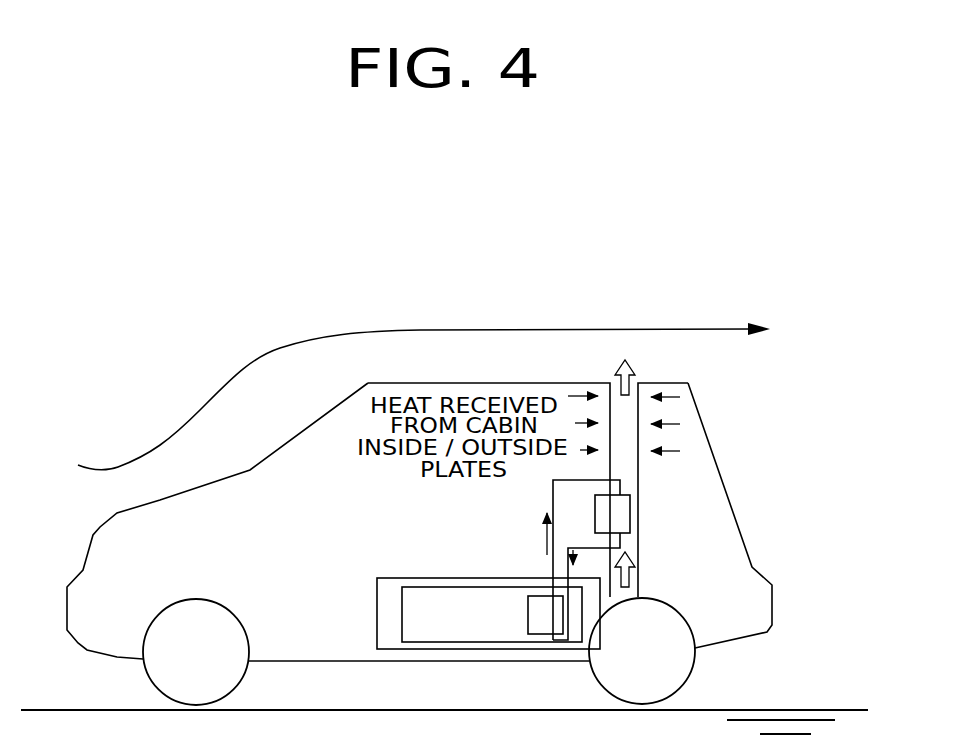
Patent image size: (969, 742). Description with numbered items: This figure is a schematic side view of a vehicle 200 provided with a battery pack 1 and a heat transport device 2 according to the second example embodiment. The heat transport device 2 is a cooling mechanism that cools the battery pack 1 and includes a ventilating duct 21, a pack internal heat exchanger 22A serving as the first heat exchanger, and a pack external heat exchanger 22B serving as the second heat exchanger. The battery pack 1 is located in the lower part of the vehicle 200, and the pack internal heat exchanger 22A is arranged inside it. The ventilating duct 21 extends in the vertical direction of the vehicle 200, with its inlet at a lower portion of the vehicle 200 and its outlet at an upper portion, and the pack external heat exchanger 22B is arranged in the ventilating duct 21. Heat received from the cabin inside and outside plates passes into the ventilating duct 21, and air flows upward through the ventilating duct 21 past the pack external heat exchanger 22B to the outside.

The battery pack 1 is at (410, 577).
The heat transport device 2 is at (660, 497).
The ventilating duct 21 is at (639, 570).
The pack internal heat exchanger 22A is at (533, 620).
The pack external heat exchanger 22B is at (629, 514).
The vehicle 200 is at (717, 468).